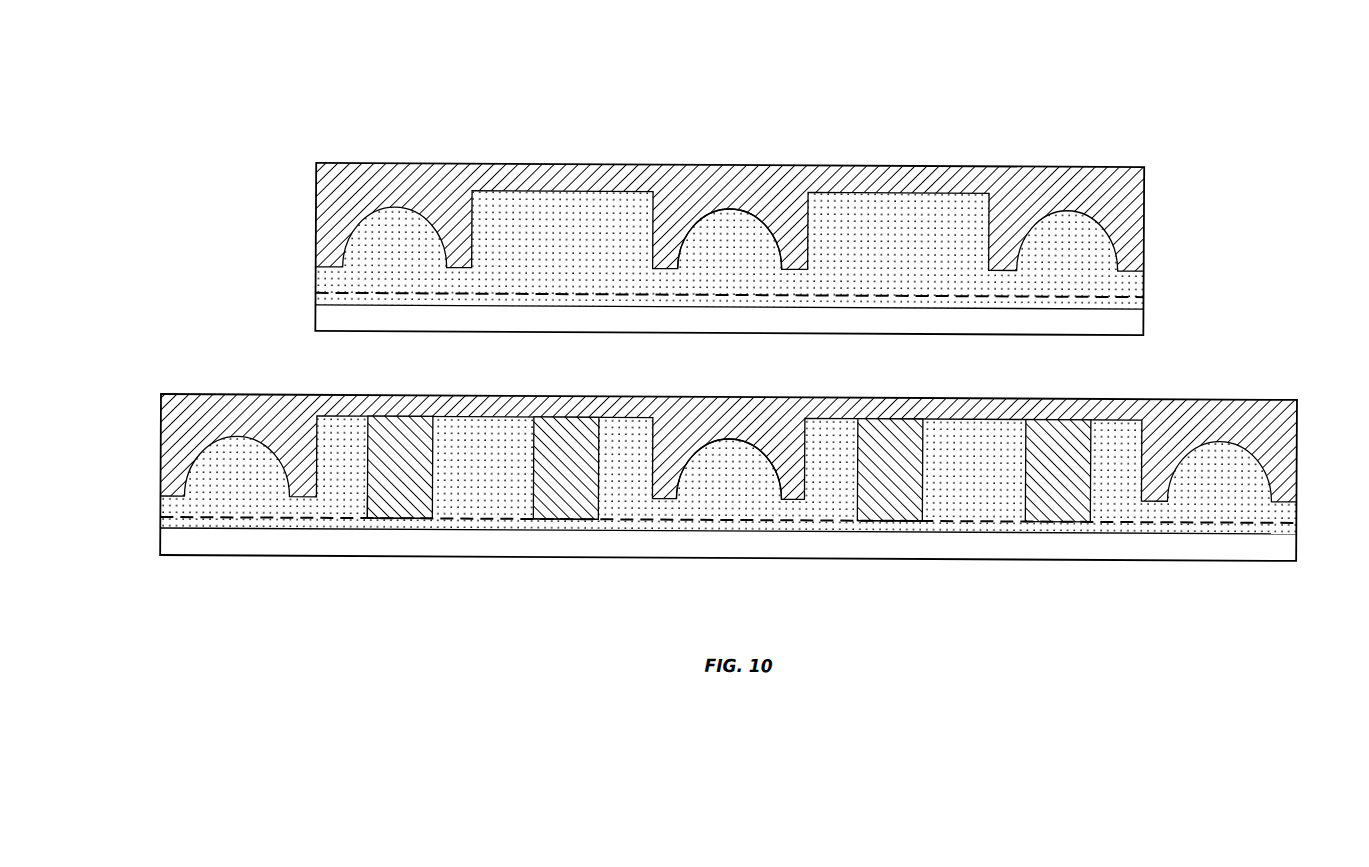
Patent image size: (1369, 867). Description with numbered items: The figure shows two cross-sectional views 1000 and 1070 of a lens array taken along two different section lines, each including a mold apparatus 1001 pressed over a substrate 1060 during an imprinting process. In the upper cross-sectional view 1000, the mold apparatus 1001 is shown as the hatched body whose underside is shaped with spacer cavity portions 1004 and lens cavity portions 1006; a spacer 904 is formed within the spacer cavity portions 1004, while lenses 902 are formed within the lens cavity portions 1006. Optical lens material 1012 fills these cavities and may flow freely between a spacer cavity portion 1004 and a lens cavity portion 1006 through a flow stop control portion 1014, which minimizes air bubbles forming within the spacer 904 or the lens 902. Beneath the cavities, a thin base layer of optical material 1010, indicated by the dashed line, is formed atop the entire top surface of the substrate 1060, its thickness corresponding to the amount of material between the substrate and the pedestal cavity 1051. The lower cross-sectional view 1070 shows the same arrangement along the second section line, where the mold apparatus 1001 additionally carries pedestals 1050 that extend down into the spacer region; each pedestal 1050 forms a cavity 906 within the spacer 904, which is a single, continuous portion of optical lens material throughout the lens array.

The cross-sectional view 1000 is at (443, 120).
The mold apparatus 1001 is at (1144, 198).
The spacer cavity portion 1004 is at (534, 185).
The lens cavity portion 1006 is at (722, 204).
The base layer of optical material 1010 is at (319, 297).
The optical lens material 1012 is at (1089, 272).
The flow stop control portion 1014 is at (663, 279).
The substrate 1060 is at (748, 325).
The lens 902 is at (742, 252).
The spacer 904 is at (577, 238).
The cross-sectional view 1070 is at (148, 367).
The pedestal 1050 is at (418, 474).
The cavity 906 is at (409, 526).
The pedestal cavity 1051 is at (414, 516).